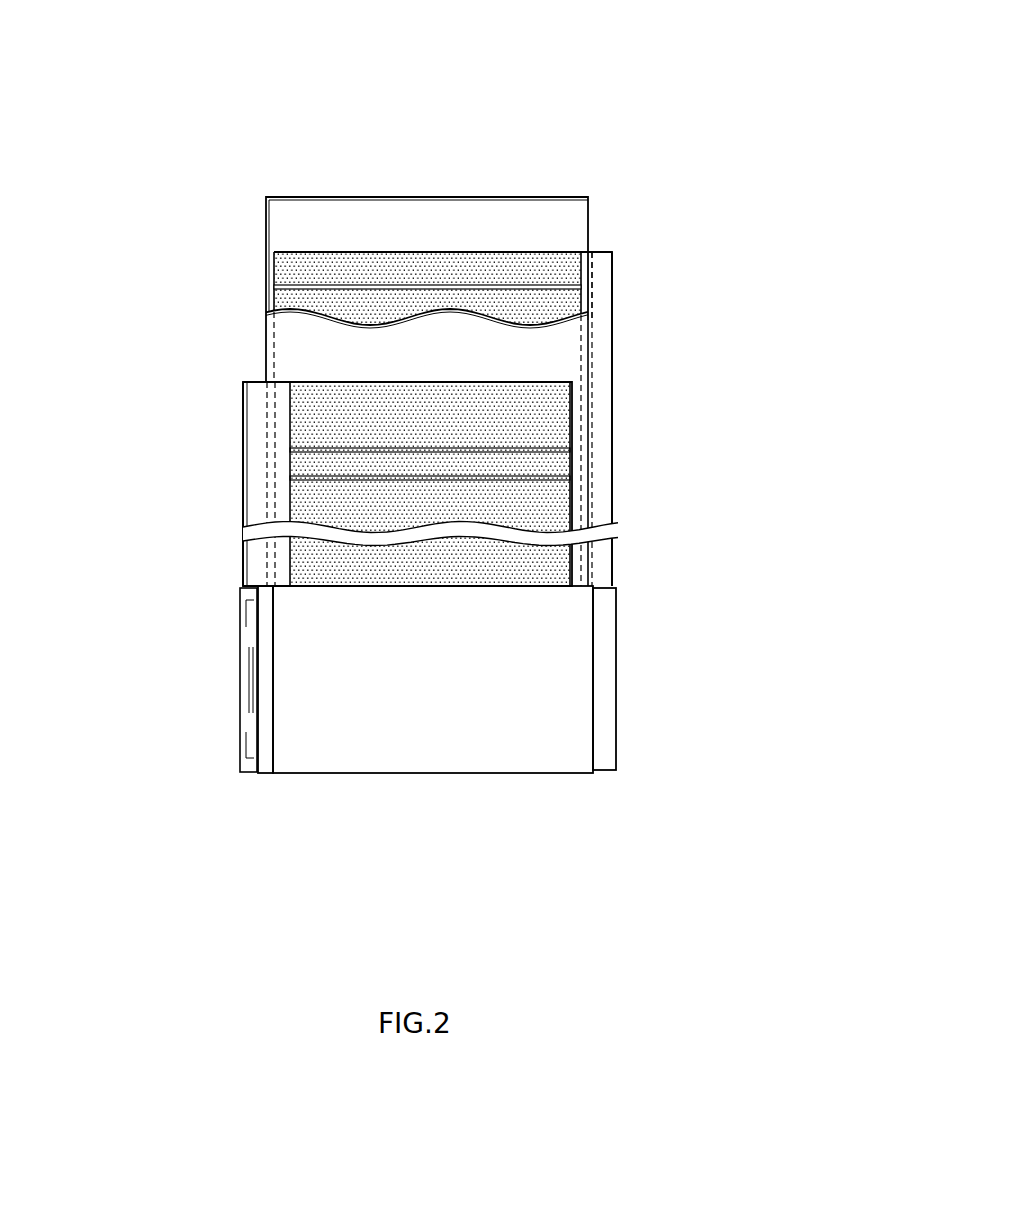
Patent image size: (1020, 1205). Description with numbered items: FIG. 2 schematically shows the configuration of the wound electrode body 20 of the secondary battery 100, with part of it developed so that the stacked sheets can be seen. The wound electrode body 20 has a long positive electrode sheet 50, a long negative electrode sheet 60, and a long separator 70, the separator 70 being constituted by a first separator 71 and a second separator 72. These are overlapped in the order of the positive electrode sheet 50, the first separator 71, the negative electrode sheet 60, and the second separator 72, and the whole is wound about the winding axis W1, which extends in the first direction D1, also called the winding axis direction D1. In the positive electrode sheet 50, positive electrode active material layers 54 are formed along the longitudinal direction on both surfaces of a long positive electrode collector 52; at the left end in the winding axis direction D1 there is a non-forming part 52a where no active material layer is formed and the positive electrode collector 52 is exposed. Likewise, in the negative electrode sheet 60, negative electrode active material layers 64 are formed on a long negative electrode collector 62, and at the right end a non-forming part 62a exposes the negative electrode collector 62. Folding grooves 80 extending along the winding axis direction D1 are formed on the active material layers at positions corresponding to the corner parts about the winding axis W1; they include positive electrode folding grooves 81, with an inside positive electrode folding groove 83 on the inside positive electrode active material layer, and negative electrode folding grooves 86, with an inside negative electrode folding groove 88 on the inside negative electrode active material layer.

The secondary battery 100 is at (613, 143).
The wound electrode body 20 is at (487, 750).
The positive electrode sheet 50 is at (243, 447).
The positive electrode collector 52 is at (243, 513).
The non-forming part 52a is at (260, 485).
The positive electrode active material layers 54 is at (303, 400).
The negative electrode sheet 60 is at (612, 340).
The negative electrode collector 62 is at (613, 428).
The non-forming part 62a is at (598, 395).
The negative electrode active material layers 64 is at (583, 268).
The separator 70 is at (196, 212).
The first separator 71 is at (297, 334).
The second separator 72 is at (287, 223).
The folding grooves 80 is at (568, 289).
The positive electrode folding grooves 81 is at (553, 452).
The inside positive electrode folding groove 83 is at (551, 481).
The negative electrode folding grooves 86 is at (427, 287).
The inside negative electrode folding groove 88 is at (427, 287).
The winding axis W1 is at (717, 679).
The first direction D1 is at (520, 898).